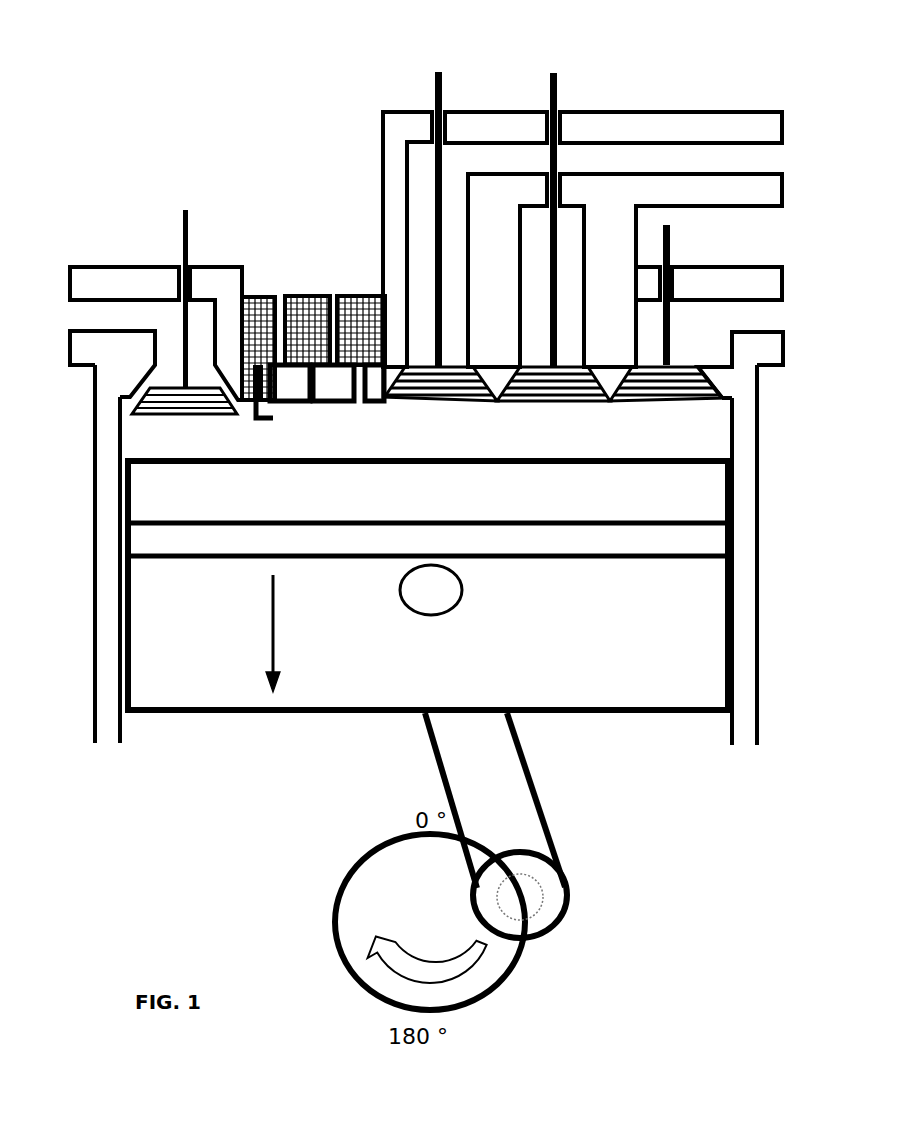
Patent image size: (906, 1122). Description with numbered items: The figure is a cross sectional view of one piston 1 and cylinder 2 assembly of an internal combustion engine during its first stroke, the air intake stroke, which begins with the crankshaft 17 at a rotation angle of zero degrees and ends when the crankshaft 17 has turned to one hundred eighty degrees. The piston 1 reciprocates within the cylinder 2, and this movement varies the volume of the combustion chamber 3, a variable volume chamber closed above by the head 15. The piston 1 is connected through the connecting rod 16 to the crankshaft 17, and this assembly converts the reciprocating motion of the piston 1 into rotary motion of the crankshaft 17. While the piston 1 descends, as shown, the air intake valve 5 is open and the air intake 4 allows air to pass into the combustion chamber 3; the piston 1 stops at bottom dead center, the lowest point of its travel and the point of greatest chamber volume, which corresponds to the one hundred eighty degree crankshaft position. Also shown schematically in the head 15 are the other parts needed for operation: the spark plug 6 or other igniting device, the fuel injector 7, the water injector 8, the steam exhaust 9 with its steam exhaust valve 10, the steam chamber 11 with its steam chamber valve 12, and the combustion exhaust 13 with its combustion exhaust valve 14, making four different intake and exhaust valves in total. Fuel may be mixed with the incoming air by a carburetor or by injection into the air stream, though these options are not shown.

The piston 1 is at (172, 590).
The cylinder 2 is at (117, 453).
The combustion chamber 3 is at (188, 432).
The air intake 4 is at (125, 315).
The air intake valve 5 is at (183, 247).
The spark plug 6 is at (260, 297).
The fuel injector 7 is at (300, 297).
The water injector 8 is at (352, 297).
The steam exhaust 9 is at (415, 212).
The steam exhaust valve 10 is at (435, 92).
The steam chamber 11 is at (535, 258).
The steam chamber valve 12 is at (557, 92).
The combustion exhaust 13 is at (710, 318).
The combustion exhaust valve 14 is at (670, 258).
The head 15 is at (757, 347).
The connecting rod 16 is at (547, 818).
The crankshaft 17 is at (523, 943).